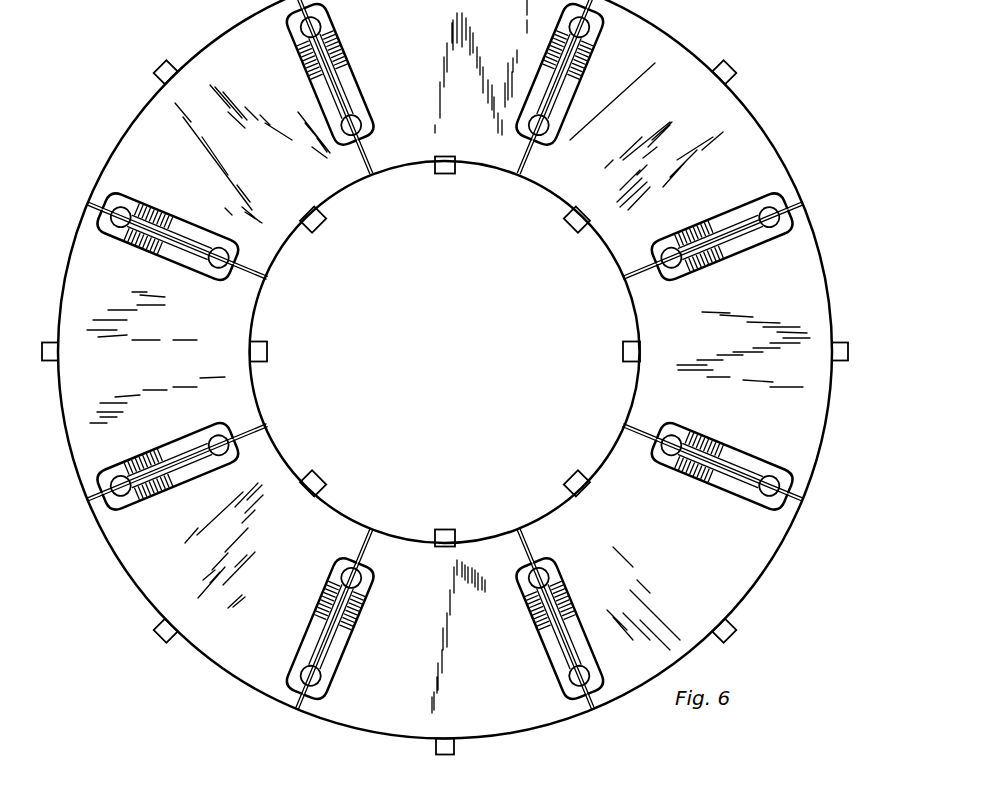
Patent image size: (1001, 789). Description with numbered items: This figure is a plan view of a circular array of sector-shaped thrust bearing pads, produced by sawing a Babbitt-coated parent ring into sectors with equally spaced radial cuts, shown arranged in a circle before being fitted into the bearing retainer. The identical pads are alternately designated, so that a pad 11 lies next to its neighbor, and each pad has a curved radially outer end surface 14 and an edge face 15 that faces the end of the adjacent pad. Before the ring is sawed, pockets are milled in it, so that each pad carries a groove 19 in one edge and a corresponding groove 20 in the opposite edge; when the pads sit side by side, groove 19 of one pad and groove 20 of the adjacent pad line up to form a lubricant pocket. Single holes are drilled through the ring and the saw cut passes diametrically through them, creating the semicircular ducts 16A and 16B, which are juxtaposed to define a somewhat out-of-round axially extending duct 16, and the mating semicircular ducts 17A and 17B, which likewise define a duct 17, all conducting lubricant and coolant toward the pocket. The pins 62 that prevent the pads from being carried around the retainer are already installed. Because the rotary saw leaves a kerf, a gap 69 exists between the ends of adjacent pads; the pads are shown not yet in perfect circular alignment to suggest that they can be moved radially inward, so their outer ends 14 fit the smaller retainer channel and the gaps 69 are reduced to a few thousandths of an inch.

The thrust bearing pad 11 is at (807, 290).
The radially outer end surface 14 is at (831, 398).
The edge face 15 is at (628, 305).
The duct 16 is at (528, 129).
The semicircular duct 16A is at (672, 248).
The semicircular duct 16B is at (672, 273).
The duct 17 is at (585, 26).
The semicircular duct 17A is at (772, 202).
The semicircular duct 17B is at (785, 232).
The groove 19 is at (316, 67).
The groove 20 is at (348, 85).
The pin 62 is at (168, 65).
The gap 69 is at (800, 500).